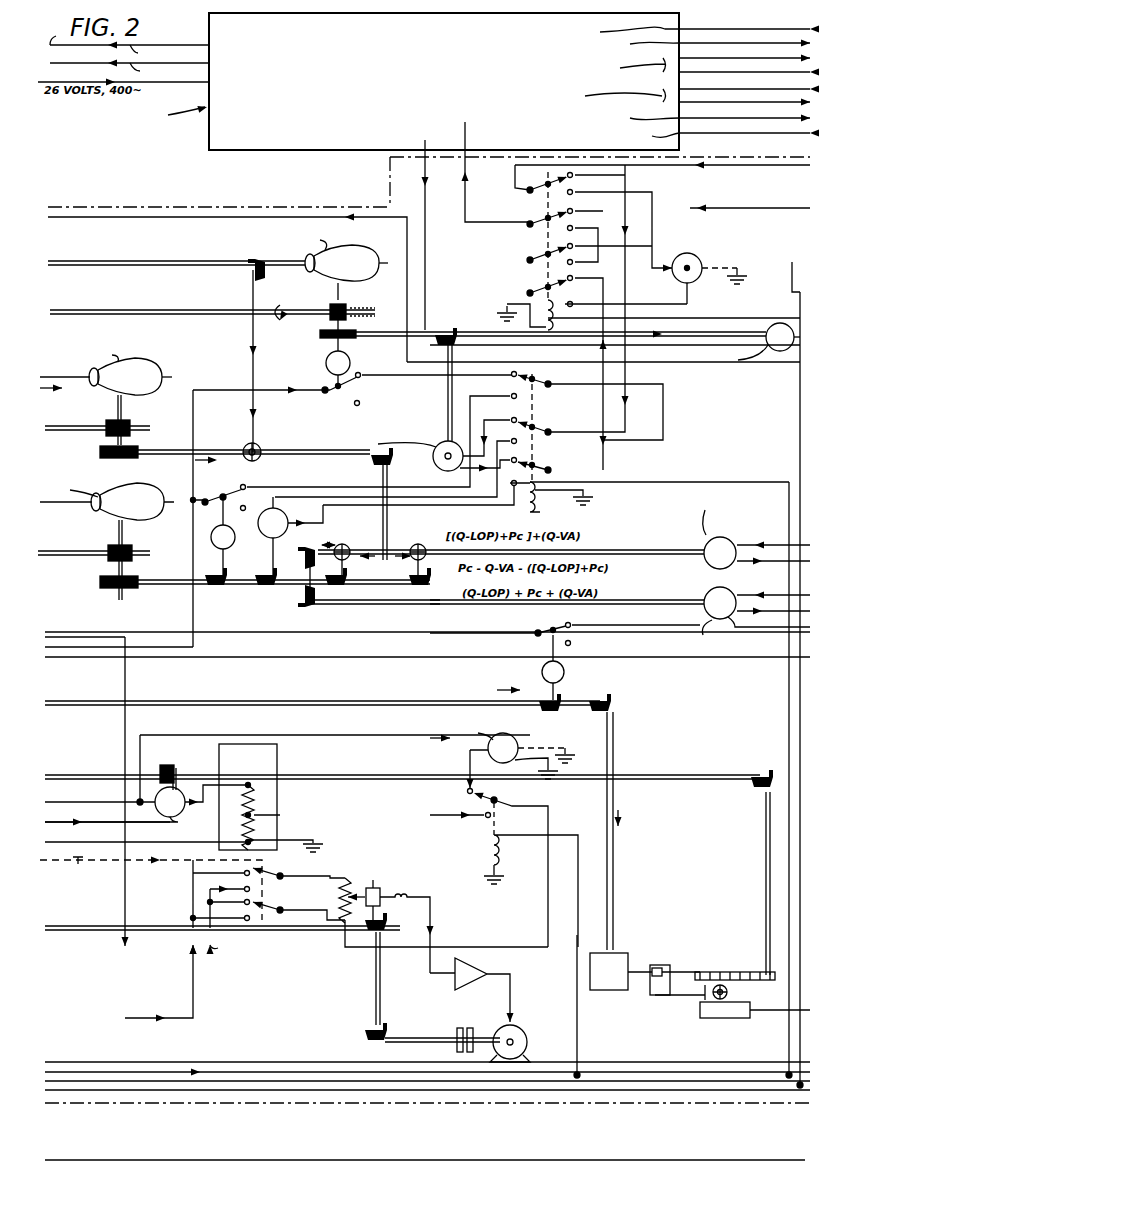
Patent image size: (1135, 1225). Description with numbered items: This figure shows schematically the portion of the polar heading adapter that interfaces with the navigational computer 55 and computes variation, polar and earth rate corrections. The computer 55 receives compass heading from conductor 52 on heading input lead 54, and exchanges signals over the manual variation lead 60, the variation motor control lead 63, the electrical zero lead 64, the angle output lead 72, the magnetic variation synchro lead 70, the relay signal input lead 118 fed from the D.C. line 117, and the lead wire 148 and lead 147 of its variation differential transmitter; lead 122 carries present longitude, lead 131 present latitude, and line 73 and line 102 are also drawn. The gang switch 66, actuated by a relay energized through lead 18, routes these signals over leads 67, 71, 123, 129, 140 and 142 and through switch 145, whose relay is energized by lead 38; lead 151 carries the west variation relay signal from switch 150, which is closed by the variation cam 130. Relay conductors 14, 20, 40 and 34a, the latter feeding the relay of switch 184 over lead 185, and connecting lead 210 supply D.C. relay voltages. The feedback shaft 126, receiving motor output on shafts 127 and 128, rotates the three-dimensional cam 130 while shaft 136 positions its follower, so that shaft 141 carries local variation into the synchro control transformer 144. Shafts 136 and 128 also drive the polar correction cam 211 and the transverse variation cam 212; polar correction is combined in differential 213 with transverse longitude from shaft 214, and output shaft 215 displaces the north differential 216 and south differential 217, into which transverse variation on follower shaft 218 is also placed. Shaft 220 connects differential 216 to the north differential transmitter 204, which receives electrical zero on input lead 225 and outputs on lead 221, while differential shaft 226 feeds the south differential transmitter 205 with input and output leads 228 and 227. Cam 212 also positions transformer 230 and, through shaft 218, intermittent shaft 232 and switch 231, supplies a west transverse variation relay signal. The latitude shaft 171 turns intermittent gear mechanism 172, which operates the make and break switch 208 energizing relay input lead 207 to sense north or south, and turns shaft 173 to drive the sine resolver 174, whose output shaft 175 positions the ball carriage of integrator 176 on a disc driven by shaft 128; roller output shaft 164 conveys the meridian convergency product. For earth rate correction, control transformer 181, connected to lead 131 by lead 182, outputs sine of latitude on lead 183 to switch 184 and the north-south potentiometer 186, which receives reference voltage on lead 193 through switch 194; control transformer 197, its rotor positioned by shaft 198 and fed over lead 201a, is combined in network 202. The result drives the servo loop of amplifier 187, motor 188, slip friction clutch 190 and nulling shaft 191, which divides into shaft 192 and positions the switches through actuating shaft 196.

The navigational computer 55 is at (209, 36).
The lead 131 is at (58, 802).
The lead 122 is at (56, 63).
The navigational computer input lead 118 is at (705, 72).
The heading input lead 54 is at (748, 43).
The signal line 73 is at (778, 43).
The D.C. line 117 is at (746, 72).
The lead 148 is at (712, 89).
The magnetic variation synchro lead 70 is at (740, 102).
The lead 60 is at (755, 118).
The variation motor control lead 63 is at (795, 133).
The lead 64 is at (425, 204).
The computer input lead 72 is at (465, 193).
The lead 147 is at (748, 165).
The lead 71 is at (765, 212).
The gang switch 66 is at (542, 232).
The lead 67 is at (795, 252).
The lead 123 is at (792, 262).
The cam follower output shaft 141 is at (480, 330).
The lead 140 is at (808, 325).
The differential transmitter 204 is at (752, 334).
The lead 129 is at (600, 350).
The lead 142 is at (795, 360).
The signal line 102 is at (350, 222).
The lead 18 is at (800, 407).
The lead 151 is at (690, 430).
The feedback shaft 126 is at (72, 262).
The three-dimensional cam 130 is at (264, 291).
The shaft 214 is at (252, 298).
The shaft 136 is at (127, 312).
The switch 150 is at (333, 395).
The polar correction cam 211 is at (117, 389).
The shaft 127 is at (72, 388).
The differential 213 is at (245, 448).
The differential output shaft 215 is at (383, 466).
The synchro control transformer 144 is at (440, 440).
The switch 145 is at (538, 420).
The lead 38 is at (684, 478).
The transverse variation cam 212 is at (104, 527).
The follower shaft 218 is at (148, 585).
The switch 231 is at (205, 492).
The intermittent shaft 232 is at (238, 524).
The transformer 230 is at (290, 536).
The differential shaft 226 is at (300, 565).
The south differential 217 is at (338, 543).
The north differential 216 is at (410, 543).
The shaft 220 is at (695, 542).
The differential transmitter input lead 225 is at (775, 545).
The lead 221 is at (738, 561).
The differential transmitter 205 is at (708, 592).
The transmitter input lead 228 is at (768, 595).
The transmitter output lead 227 is at (748, 620).
The make and break switch 208 is at (536, 630).
The input lead 207 is at (615, 630).
The connecting lead 210 is at (82, 628).
The relay conductor 14 is at (275, 657).
The lead 193 is at (138, 663).
The intermittent gear mechanism 172 is at (542, 672).
The shaft 171 is at (405, 698).
The shaft 173 is at (613, 862).
The lead 182 is at (350, 740).
The control transformer 181 is at (505, 733).
The lead 183 is at (468, 760).
The shaft 128 is at (52, 777).
The shaft 198 is at (175, 768).
The control transformer 197 is at (176, 817).
The lead 201a is at (58, 812).
The network 202 is at (277, 760).
The switch 184 is at (505, 800).
The switch actuating shaft 196 is at (62, 868).
The switch 194 is at (210, 890).
The north-south potentiometer 186 is at (350, 880).
The shaft 192 is at (222, 938).
The servo loop nulling shaft 191 is at (375, 990).
The servo amplifier 187 is at (477, 966).
The slip friction clutch 190 is at (445, 1032).
The servo motor 188 is at (522, 1030).
The lead 185 is at (578, 1035).
The sine resolver 174 is at (616, 945).
The output shaft 175 is at (630, 965).
The integrator 176 is at (732, 960).
The roller output shaft 164 is at (778, 1012).
The relay conductor 40 is at (50, 1064).
The conductor 34a is at (292, 1081).
The relay conductor 20 is at (85, 1100).
The conductor 52 is at (555, 1160).